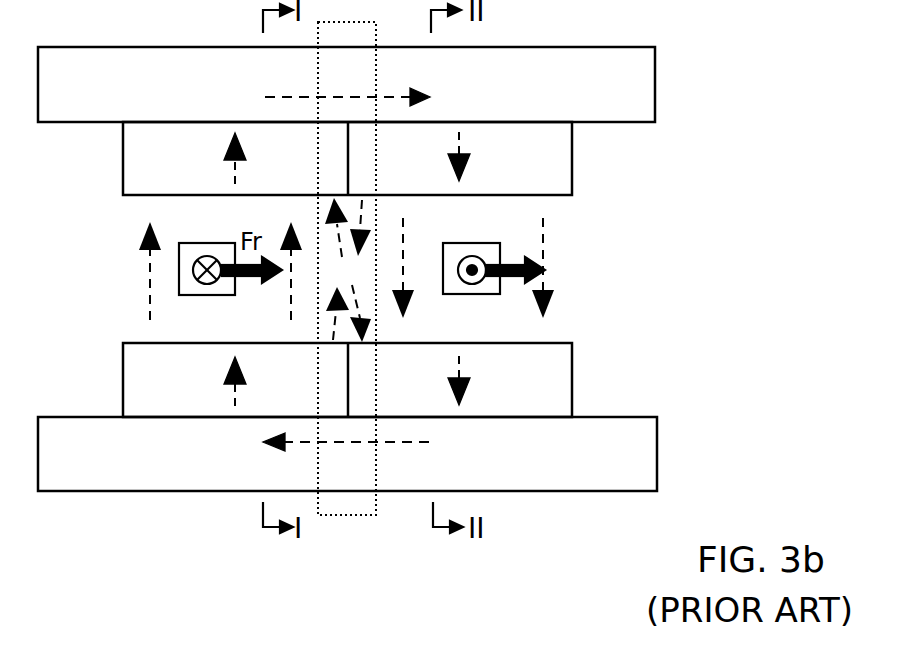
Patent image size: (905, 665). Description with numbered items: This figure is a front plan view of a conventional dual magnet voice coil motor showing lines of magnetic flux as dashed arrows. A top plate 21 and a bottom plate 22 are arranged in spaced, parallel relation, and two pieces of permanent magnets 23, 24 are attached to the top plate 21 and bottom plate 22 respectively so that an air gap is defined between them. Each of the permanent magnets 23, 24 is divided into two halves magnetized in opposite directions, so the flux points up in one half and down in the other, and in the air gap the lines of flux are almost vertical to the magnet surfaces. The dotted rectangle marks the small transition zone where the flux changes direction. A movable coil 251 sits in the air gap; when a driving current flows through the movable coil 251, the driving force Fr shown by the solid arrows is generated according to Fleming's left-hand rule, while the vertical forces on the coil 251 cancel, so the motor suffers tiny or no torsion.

The top plate 21 is at (613, 86).
The bottom plate 22 is at (615, 465).
The permanent magnet 23 is at (545, 157).
The permanent magnet 24 is at (545, 380).
The movable coil 251 is at (488, 287).